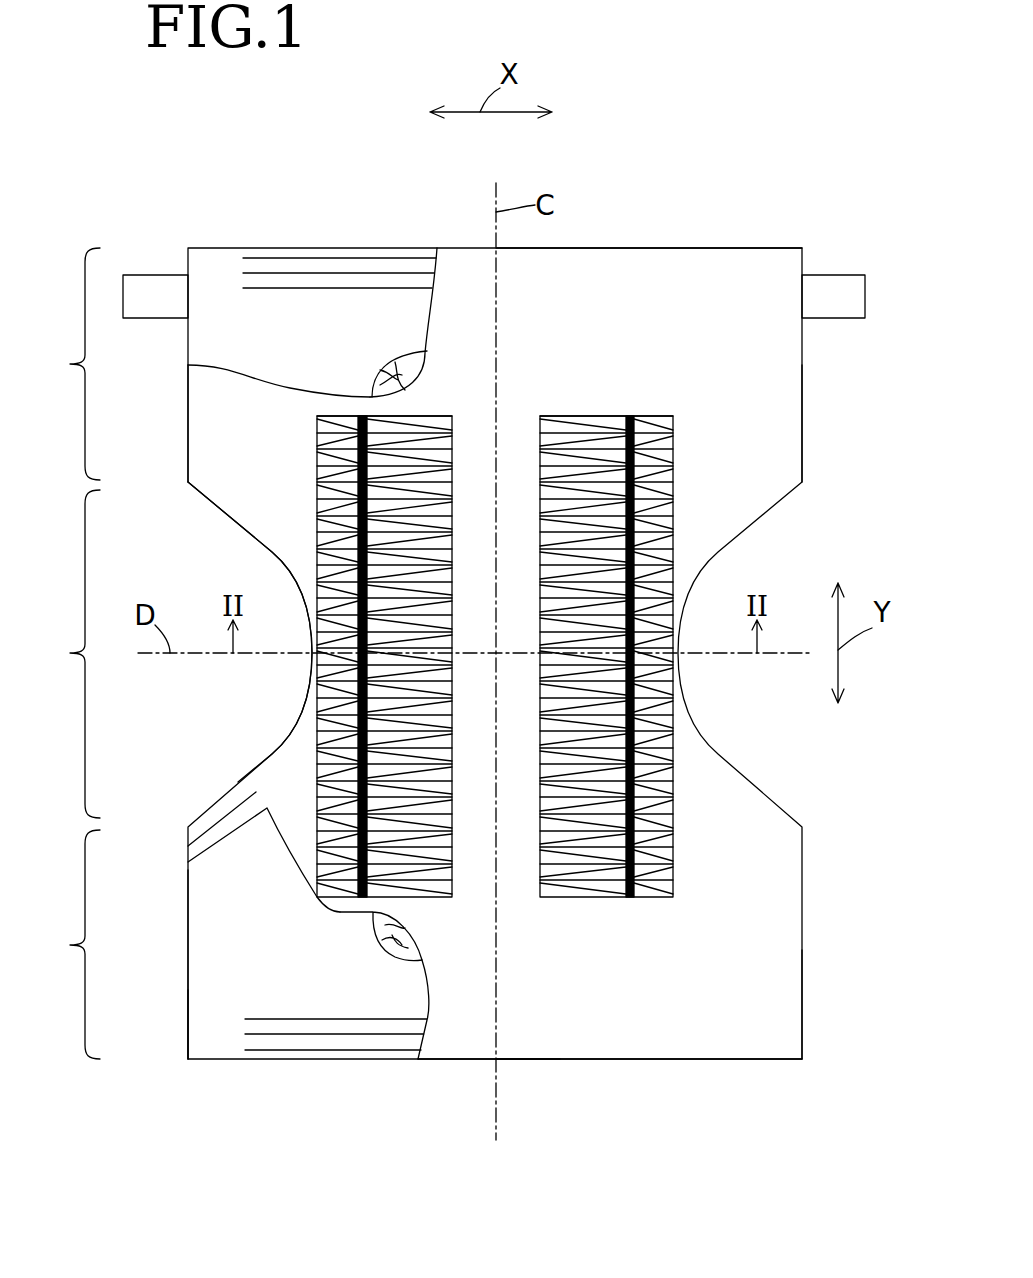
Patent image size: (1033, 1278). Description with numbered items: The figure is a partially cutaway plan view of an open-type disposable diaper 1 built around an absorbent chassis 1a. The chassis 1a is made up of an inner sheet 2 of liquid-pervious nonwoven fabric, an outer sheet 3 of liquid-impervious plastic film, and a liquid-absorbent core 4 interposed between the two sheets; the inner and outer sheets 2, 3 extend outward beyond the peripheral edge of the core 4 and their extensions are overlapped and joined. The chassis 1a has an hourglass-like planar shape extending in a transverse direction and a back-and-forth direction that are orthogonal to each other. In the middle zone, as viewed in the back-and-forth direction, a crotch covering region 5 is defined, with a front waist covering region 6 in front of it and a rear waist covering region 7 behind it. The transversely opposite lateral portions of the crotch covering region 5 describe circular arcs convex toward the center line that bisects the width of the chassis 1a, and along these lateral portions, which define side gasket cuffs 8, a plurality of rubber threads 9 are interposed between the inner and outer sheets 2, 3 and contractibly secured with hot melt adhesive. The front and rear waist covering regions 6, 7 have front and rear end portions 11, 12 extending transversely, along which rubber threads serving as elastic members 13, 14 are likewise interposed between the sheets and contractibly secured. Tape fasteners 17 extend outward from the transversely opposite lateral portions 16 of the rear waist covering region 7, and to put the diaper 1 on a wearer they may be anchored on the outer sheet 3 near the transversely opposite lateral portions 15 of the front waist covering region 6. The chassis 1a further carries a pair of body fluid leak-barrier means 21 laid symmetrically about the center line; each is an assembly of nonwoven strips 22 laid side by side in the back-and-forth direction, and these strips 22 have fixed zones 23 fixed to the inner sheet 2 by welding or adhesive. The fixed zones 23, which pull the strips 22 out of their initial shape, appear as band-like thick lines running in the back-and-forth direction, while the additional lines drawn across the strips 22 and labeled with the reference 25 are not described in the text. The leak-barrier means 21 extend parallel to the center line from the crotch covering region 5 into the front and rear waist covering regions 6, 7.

The disposable diaper 1 is at (690, 154).
The absorbent chassis 1a is at (718, 239).
The inner sheet 2 is at (457, 1043).
The outer sheet 3 is at (205, 968).
The liquid-absorbent core 4 is at (392, 372).
The crotch covering region 5 is at (70, 654).
The front waist covering region 6 is at (70, 944).
The rear waist covering region 7 is at (205, 364).
The side gasket cuffs 8 is at (267, 517).
The rubber threads 9 is at (222, 812).
The front end portion 11 is at (550, 1035).
The rear end portion 12 is at (462, 260).
The elastic members 13 is at (305, 1034).
The elastic members 14 is at (258, 290).
The lateral portions of the front waist covering region 15 is at (205, 1024).
The lateral portions of the rear waist covering region 16 is at (207, 420).
The tape fasteners 17 is at (155, 282).
The body fluid leak-barrier means 21 is at (437, 389).
The strips 22 is at (446, 480).
The fixed zones 23 is at (330, 428).
The pleat fold lines 25 is at (325, 512).